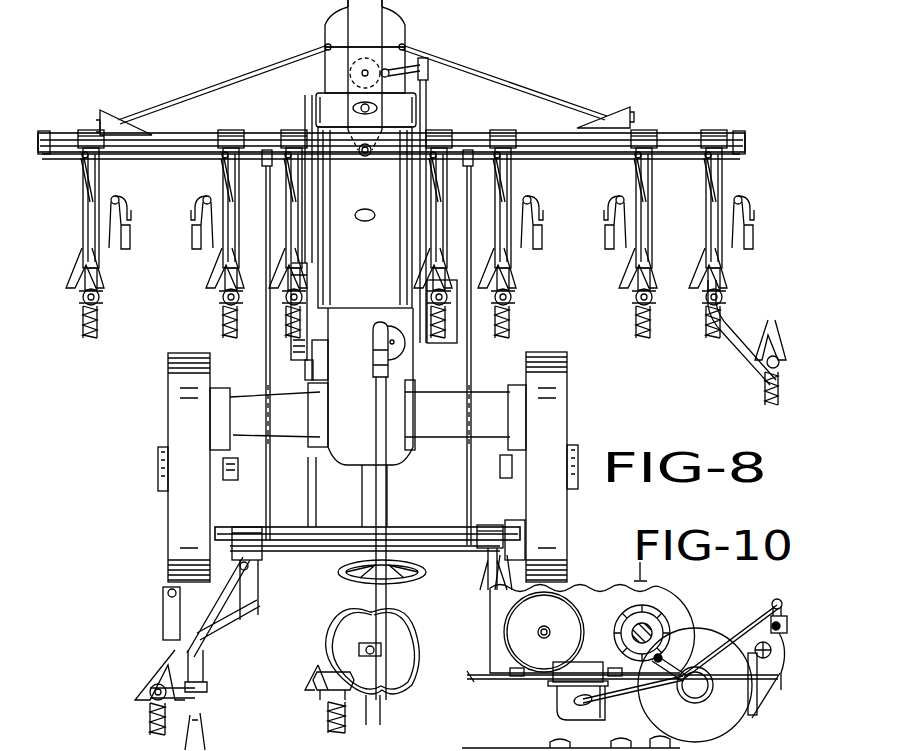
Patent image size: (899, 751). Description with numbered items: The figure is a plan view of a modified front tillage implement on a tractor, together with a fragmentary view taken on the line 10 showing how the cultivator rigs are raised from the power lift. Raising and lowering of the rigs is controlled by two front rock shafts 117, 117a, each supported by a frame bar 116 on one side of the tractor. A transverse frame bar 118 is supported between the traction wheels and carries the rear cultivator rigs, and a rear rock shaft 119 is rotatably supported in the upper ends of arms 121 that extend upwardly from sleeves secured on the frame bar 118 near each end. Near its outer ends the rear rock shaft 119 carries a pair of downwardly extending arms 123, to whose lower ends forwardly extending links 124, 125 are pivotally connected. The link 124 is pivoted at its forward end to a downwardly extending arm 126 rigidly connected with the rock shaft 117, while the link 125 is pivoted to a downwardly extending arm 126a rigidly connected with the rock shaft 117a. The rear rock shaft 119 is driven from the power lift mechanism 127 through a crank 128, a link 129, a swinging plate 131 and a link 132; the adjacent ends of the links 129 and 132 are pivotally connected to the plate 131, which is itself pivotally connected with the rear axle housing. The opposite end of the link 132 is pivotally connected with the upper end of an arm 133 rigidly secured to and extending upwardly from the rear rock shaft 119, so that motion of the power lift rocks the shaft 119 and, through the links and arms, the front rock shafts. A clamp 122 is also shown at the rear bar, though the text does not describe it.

In FIG. 8, the line 10— 10 is at (243, 372).
In FIG. 8, the frame bar 116 is at (186, 136).
In FIG. 8, the front rock shaft 117 is at (555, 154).
In FIG. 8, the front rock shaft 117a is at (172, 160).
In FIG. 8, the frame bar 118 is at (436, 527).
In FIG. 8, the rear rock shaft 119 is at (438, 553).
In FIG. 10, the rear rock shaft 119 is at (783, 646).
In FIG. 8, the arms 121 is at (487, 568).
In FIG. 8, the clamp 122 is at (490, 524).
In FIG. 10, the downwardly extending arms 123 is at (780, 682).
In FIG. 8, the link 124 is at (469, 359).
In FIG. 8, the link 125 is at (266, 316).
In FIG. 10, the link 125 is at (478, 676).
In FIG. 8, the downwardly extending arm 126 is at (468, 149).
In FIG. 8, the downwardly extending arm 126a is at (266, 149).
In FIG. 10, the power lift mechanism 127 is at (555, 694).
In FIG. 10, the crank 128 is at (561, 702).
In FIG. 10, the link 129 is at (644, 703).
In FIG. 10, the swinging plate 131 is at (685, 640).
In FIG. 10, the link 132 is at (765, 611).
In FIG. 10, the arm 133 is at (797, 590).